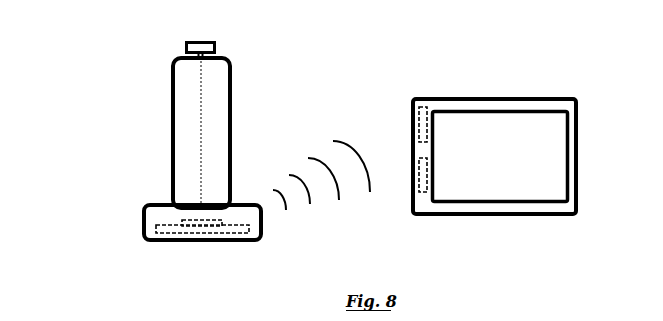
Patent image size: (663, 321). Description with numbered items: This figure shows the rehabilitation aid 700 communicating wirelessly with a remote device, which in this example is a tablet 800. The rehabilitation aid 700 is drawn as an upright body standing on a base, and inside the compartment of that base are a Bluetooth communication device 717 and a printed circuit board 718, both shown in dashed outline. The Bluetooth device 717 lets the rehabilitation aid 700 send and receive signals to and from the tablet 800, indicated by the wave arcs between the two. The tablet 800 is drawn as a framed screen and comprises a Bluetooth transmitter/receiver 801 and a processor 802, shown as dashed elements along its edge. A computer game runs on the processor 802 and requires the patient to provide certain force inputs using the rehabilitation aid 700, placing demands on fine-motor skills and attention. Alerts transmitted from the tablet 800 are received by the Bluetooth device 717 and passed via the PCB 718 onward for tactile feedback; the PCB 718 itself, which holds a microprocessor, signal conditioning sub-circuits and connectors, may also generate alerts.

The rehabilitation aid 700 is at (134, 58).
The Bluetooth communication device 717 is at (180, 222).
The printed circuit board (PCB) 718 is at (180, 230).
The tablet 800 is at (526, 205).
The Bluetooth transmitter/receiver 801 is at (422, 120).
The processor 802 is at (419, 189).